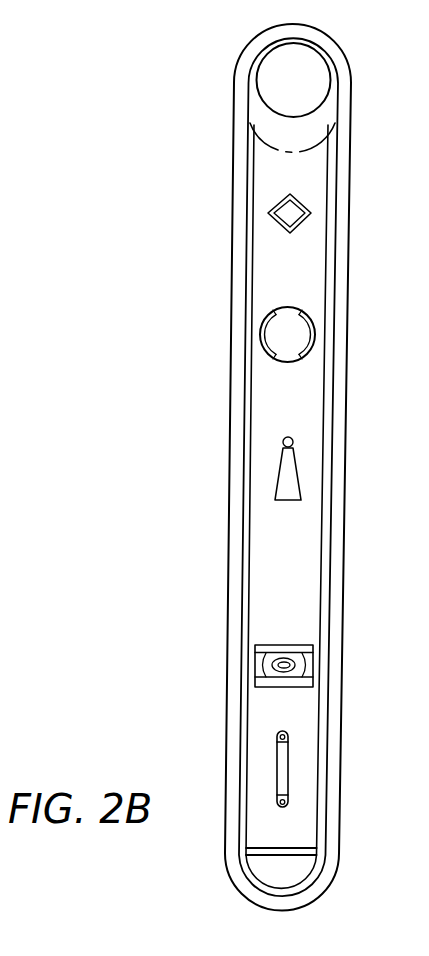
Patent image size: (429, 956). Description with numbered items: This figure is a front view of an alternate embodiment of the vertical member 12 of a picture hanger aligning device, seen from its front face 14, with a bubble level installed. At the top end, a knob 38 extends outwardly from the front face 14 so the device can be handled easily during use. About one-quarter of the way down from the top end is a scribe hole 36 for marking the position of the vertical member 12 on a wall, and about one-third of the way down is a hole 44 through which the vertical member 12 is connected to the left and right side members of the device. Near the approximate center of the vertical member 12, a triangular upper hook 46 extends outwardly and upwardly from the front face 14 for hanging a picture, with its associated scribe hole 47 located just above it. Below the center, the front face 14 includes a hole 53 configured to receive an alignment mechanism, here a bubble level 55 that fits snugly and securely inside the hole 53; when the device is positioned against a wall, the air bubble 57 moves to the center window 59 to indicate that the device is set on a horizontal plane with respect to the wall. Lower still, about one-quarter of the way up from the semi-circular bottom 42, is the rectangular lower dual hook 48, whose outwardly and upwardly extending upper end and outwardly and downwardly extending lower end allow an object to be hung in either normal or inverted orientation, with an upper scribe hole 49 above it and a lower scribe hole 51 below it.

The vertical member 12 is at (350, 108).
The front face 14 is at (310, 175).
The scribe hole 36 is at (288, 215).
The knob 38 is at (280, 75).
The semi-circular bottom 42 is at (232, 899).
The hole 44 is at (288, 333).
The triangular upper hook 46 is at (293, 488).
The scribe hole 47 is at (290, 413).
The rectangular lower dual hook 48 is at (249, 769).
The upper scribe hole 49 is at (290, 698).
The lower scribe hole 51 is at (282, 807).
The hole 53 is at (293, 654).
The bubble level 55 is at (263, 667).
The air bubble 57 is at (292, 666).
The center window 59 is at (300, 673).